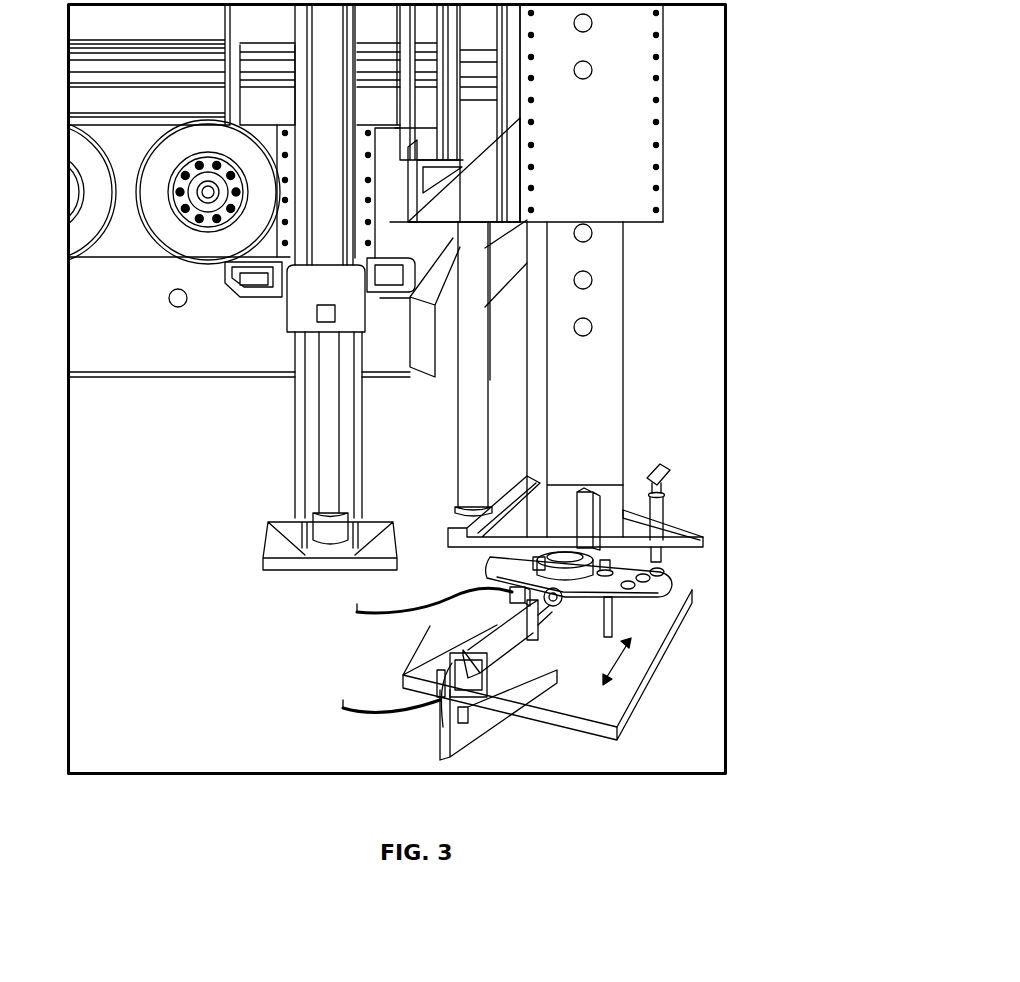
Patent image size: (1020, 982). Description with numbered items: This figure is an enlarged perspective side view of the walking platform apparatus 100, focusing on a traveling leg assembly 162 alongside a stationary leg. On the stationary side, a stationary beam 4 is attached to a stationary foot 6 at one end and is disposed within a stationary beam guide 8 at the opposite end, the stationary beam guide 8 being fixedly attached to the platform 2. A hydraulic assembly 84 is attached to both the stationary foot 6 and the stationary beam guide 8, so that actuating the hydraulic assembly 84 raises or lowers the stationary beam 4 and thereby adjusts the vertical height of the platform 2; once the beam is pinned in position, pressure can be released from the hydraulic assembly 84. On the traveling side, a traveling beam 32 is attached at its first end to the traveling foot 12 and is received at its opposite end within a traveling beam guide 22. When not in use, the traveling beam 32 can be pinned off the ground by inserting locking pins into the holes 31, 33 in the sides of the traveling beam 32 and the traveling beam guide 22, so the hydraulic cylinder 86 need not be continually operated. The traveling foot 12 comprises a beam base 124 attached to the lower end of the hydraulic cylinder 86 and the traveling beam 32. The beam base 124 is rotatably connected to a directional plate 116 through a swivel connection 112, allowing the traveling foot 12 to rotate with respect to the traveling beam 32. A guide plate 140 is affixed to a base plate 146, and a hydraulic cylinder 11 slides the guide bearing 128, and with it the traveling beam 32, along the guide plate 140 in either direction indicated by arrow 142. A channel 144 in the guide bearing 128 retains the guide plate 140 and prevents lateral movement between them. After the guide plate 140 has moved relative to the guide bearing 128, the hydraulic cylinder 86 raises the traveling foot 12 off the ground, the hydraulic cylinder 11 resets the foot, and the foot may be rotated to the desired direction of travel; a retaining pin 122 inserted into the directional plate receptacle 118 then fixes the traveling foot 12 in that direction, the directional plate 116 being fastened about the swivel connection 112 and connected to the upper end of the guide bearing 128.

The platform 2 is at (183, 348).
The stationary beam 4 is at (308, 424).
The stationary foot 6 is at (298, 568).
The stationary beam guide 8 is at (285, 205).
The hydraulic cylinder 11 is at (483, 650).
The traveling foot 12 is at (348, 657).
The traveling beam guide 22 is at (623, 170).
The hole 31 is at (595, 327).
The traveling beam 32 is at (628, 312).
The hole 33 is at (593, 72).
The hydraulic assembly 84 is at (328, 463).
The hydraulic cylinder 86 is at (472, 428).
The walking platform apparatus 100 is at (744, 173).
The swivel connection 112 is at (683, 523).
The directional plate 116 is at (672, 582).
The directional plate receptacle 118 is at (665, 565).
The retaining pin 122 is at (667, 468).
The beam base 124 is at (455, 538).
The guide bearing 128 is at (625, 600).
The guide plate 140 is at (527, 672).
The arrow 142 is at (620, 667).
The channel 144 is at (630, 613).
The base plate 146 is at (613, 707).
The traveling leg assembly 162 is at (670, 247).